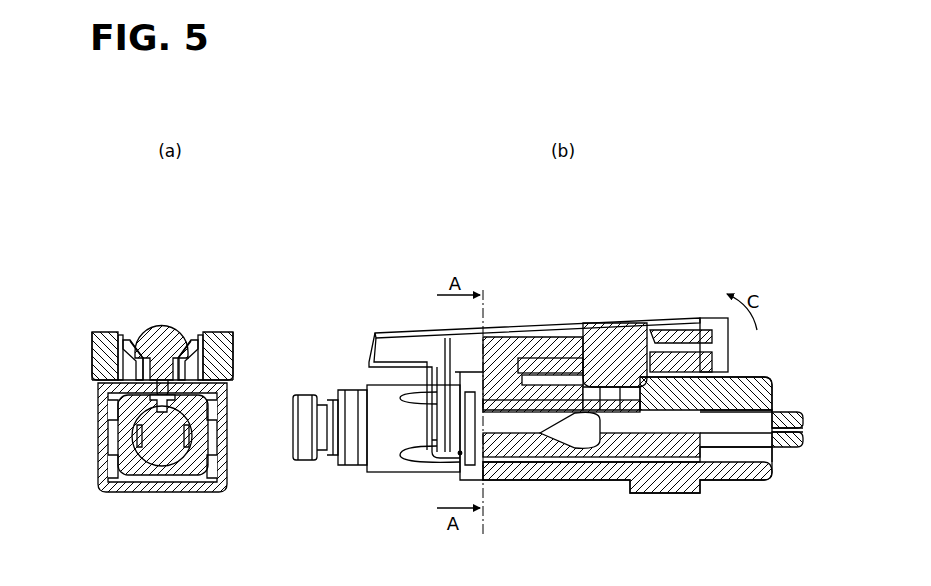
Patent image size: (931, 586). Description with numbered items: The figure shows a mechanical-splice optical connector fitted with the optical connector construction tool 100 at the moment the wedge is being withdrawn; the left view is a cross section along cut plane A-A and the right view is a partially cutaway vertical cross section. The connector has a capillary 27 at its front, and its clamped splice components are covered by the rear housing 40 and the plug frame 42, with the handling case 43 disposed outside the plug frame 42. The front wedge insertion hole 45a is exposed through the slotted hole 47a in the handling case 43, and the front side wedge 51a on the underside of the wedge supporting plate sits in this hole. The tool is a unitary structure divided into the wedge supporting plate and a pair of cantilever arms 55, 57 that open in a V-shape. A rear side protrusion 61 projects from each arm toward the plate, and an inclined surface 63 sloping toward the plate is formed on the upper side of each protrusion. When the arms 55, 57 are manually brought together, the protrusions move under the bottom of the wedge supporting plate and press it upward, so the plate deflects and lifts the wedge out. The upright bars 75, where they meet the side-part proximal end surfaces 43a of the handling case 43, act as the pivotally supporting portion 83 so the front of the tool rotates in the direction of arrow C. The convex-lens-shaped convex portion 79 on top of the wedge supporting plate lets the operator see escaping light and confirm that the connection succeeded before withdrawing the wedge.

The capillary 27 is at (795, 448).
The rear housing 40 is at (160, 470).
The plug frame 42 is at (772, 392).
The handling case 43 is at (757, 376).
The side-part proximal end surface 43a is at (443, 385).
The front wedge insertion hole 45a is at (612, 384).
The slotted hole 47a is at (527, 358).
The front side wedge 51a is at (573, 447).
The arm 55 is at (92, 365).
The arm 57 is at (232, 358).
The rear side protrusion 61 is at (110, 356).
The inclined surface 63 is at (150, 345).
The upright bar 75 is at (432, 410).
The convex portion 79 is at (160, 328).
The pivotally supporting portion 83 is at (458, 455).
The optical connector construction tool 100 is at (680, 242).